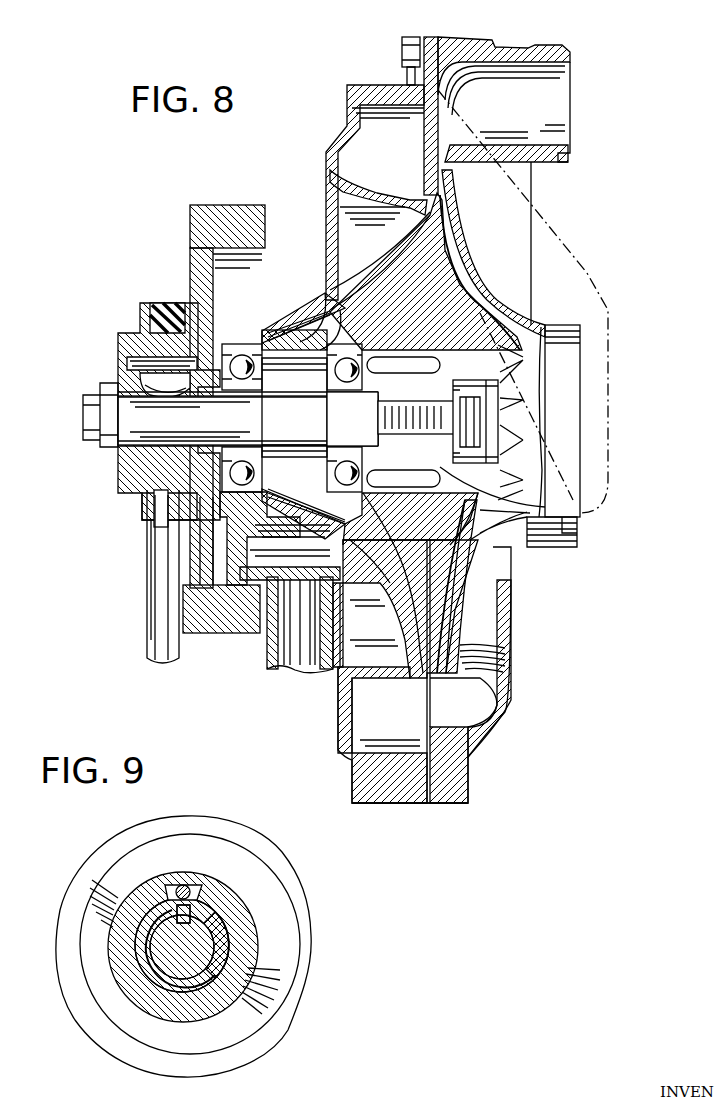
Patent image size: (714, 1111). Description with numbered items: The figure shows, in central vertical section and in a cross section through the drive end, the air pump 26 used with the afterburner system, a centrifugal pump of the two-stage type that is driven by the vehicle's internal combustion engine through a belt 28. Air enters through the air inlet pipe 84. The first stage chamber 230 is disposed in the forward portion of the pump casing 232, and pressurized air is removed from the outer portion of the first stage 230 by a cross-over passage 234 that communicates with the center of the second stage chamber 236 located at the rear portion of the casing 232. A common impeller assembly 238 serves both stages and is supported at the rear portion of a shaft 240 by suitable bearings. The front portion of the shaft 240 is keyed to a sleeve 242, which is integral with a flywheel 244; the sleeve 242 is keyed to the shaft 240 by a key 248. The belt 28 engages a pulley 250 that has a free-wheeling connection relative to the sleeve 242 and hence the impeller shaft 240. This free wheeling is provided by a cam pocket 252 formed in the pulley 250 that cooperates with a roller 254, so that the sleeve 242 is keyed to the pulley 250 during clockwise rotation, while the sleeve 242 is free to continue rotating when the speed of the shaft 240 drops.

In FIG. 8, the air pump 26 is at (345, 82).
In FIG. 8, the belt 28 is at (150, 625).
In FIG. 8, the air inlet pipe 84 is at (297, 655).
In FIG. 8, the first stage chamber 230 is at (387, 270).
In FIG. 8, the pump casing 232 is at (405, 806).
In FIG. 8, the cross-over passage 234 is at (550, 222).
In FIG. 8, the second stage chamber 236 is at (455, 588).
In FIG. 8, the impeller assembly 238 is at (447, 617).
In FIG. 8, the shaft 240 is at (230, 407).
In FIG. 9, the shaft 240 is at (163, 963).
In FIG. 8, the sleeve 242 is at (137, 457).
In FIG. 9, the sleeve 242 is at (183, 987).
In FIG. 8, the flywheel 244 is at (217, 217).
In FIG. 8, the key 248 is at (150, 382).
In FIG. 9, the key 248 is at (170, 917).
In FIG. 8, the pulley 250 is at (150, 497).
In FIG. 9, the pulley 250 is at (117, 963).
In FIG. 9, the cam pocket 252 is at (167, 900).
In FIG. 8, the roller 254 is at (133, 337).
In FIG. 9, the roller 254 is at (183, 885).